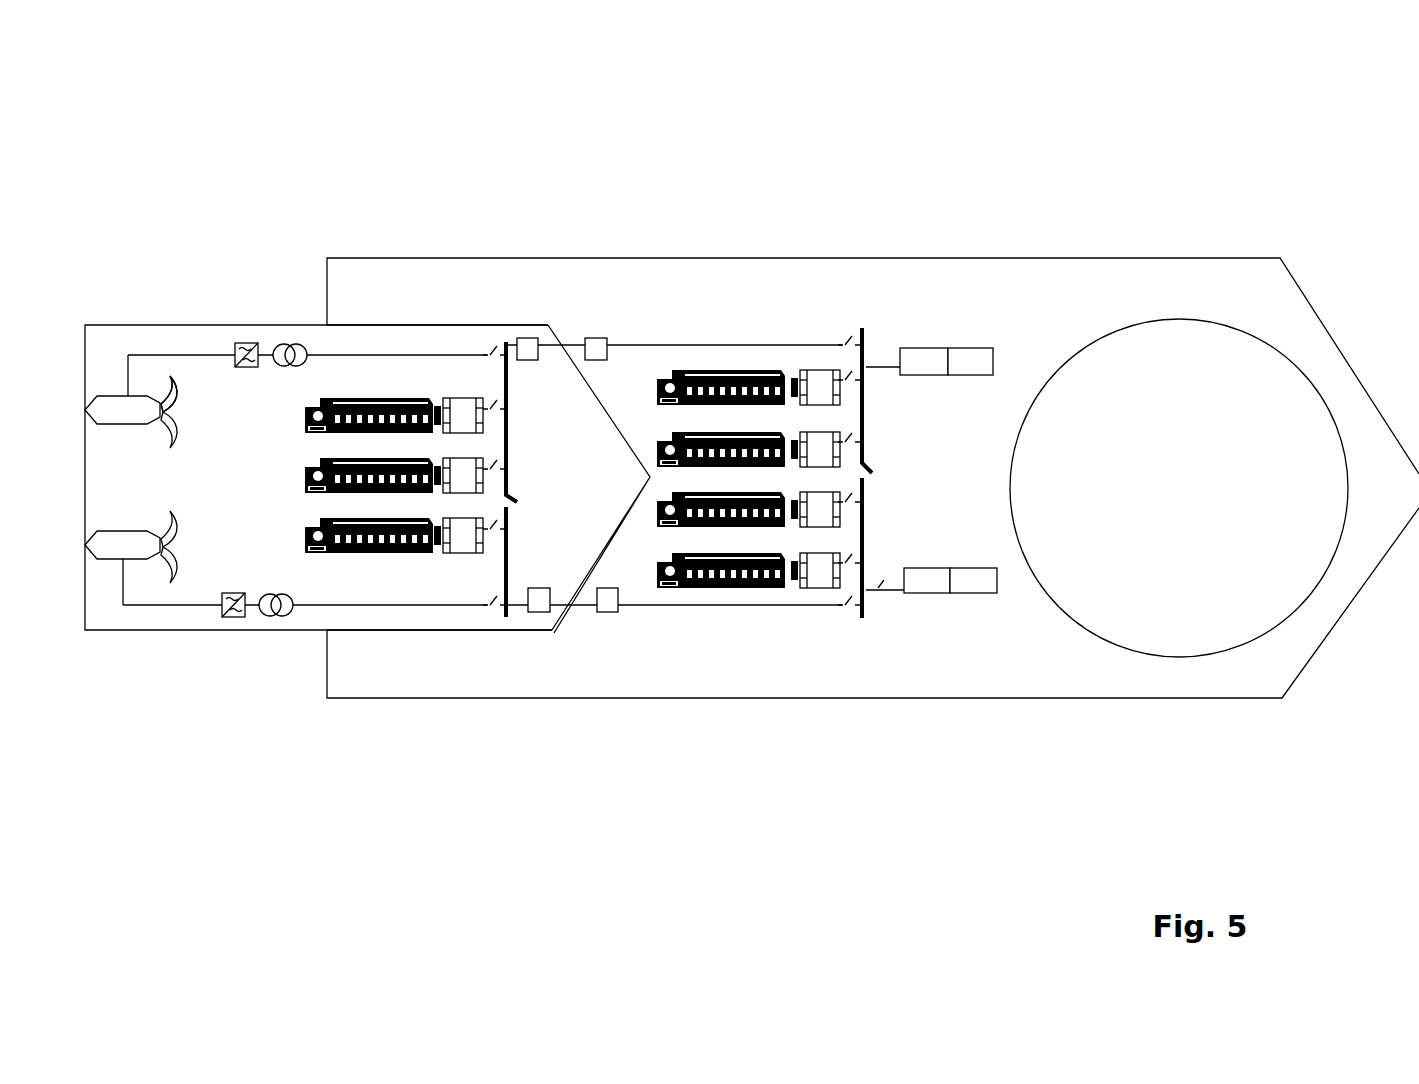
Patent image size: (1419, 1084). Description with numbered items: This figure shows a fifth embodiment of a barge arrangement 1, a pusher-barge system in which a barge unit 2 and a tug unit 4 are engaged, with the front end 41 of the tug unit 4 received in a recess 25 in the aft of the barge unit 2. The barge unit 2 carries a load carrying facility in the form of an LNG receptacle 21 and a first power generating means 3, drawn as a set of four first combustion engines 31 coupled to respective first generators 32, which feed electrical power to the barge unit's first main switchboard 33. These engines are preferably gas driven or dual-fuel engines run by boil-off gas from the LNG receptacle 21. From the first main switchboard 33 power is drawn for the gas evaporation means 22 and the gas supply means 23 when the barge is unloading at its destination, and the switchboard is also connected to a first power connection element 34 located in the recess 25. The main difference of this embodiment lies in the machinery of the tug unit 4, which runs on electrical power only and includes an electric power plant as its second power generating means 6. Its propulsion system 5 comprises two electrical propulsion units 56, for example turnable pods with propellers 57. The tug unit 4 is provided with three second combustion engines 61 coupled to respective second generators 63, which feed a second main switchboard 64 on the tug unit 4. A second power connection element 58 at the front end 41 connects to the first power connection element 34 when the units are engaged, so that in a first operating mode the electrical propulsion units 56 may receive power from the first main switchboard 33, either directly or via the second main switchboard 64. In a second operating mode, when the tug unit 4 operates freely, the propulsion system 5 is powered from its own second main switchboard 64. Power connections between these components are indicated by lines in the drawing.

The barge arrangement 1 is at (708, 247).
The barge unit 2 is at (1235, 303).
The first power generating means 3 is at (733, 360).
The tug unit 4 is at (146, 289).
The propulsion system 5 is at (130, 490).
The second power generating means 6 is at (330, 580).
The LNG receptacle 21 is at (1235, 465).
The gas evaporation means 22 is at (983, 362).
The gas supply means 23 is at (915, 362).
The recess 25 is at (458, 325).
The first combustion engine 31 is at (707, 585).
The first generator 32 is at (820, 575).
The first main switchboard 33 is at (878, 512).
The first power connection element 34 is at (596, 338).
The front end 41 is at (632, 470).
The electrical propulsion unit 56 is at (107, 402).
The propeller 57 is at (161, 400).
The second power connection element 58 is at (527, 347).
The second combustion engine 61 is at (383, 553).
The second generator 63 is at (458, 540).
The second main switchboard 64 is at (528, 465).